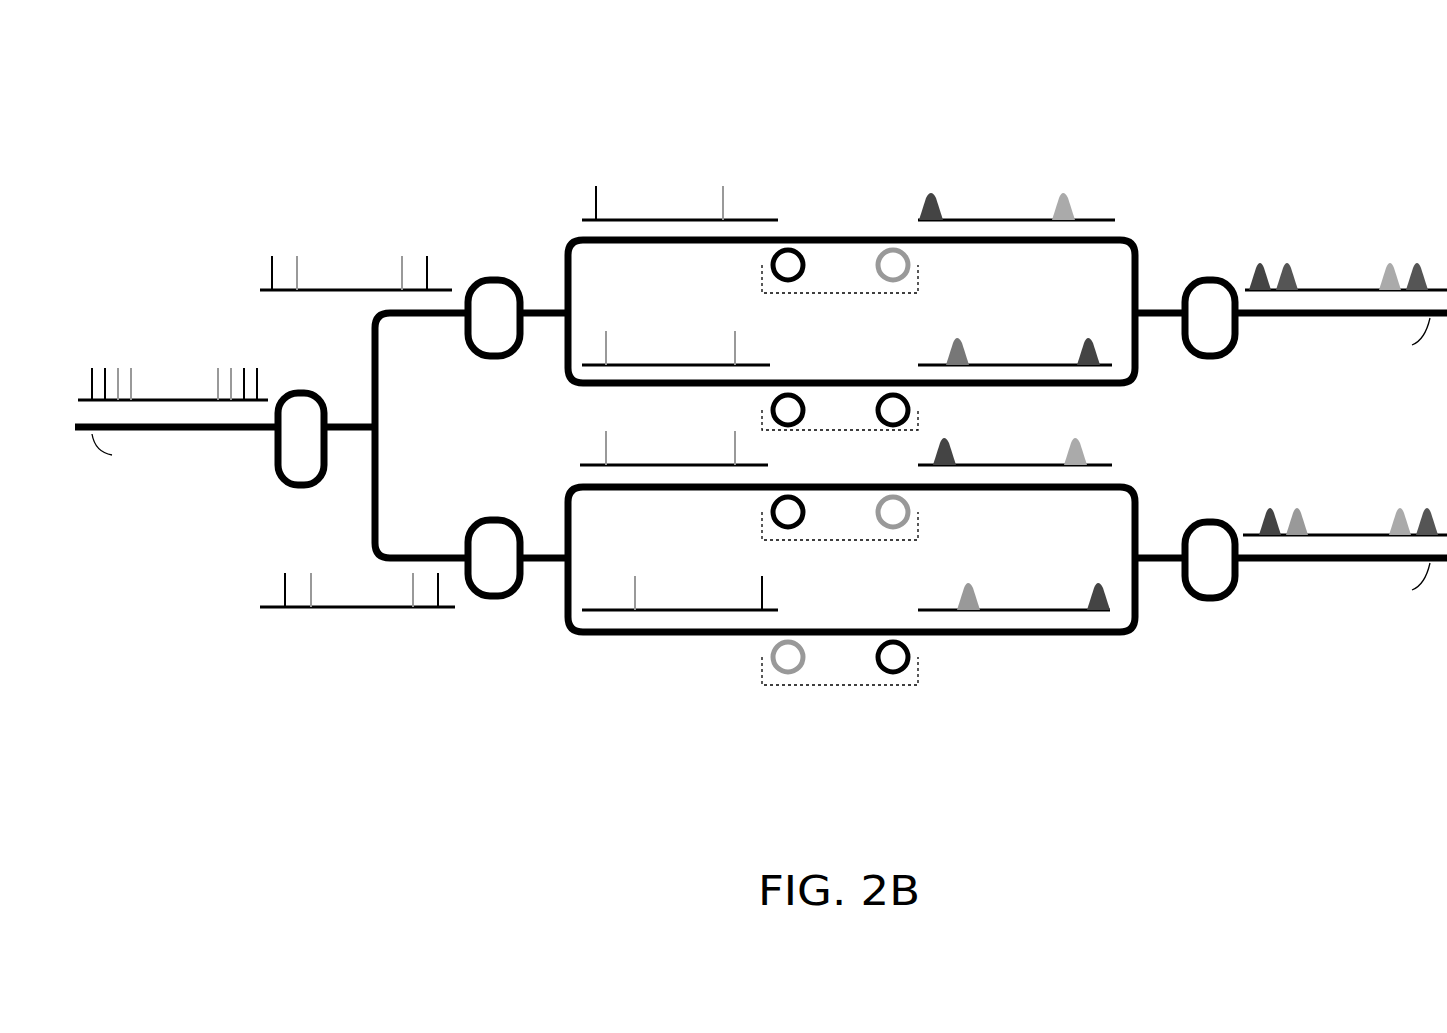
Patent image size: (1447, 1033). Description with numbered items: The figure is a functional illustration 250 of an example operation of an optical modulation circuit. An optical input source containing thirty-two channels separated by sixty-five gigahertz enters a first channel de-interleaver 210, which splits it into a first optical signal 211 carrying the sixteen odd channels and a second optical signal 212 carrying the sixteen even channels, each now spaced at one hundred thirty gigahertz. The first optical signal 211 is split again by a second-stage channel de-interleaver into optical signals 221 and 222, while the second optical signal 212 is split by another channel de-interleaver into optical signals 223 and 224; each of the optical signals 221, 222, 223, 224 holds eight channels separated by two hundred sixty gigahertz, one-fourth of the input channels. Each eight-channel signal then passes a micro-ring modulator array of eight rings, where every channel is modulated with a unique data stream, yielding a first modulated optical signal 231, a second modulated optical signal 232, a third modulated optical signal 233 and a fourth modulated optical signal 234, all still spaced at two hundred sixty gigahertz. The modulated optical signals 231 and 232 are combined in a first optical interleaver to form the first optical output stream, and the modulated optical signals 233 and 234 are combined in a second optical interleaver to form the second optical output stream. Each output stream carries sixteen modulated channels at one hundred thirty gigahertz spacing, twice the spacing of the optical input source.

The functional illustration 250 is at (212, 72).
The first channel de-interleaver 210 is at (301, 439).
The first optical signal 211 is at (400, 322).
The second optical signal 212 is at (398, 548).
The optical signal 221 is at (571, 245).
The optical signal 222 is at (571, 380).
The optical signal 223 is at (571, 492).
The optical signal 224 is at (576, 632).
The first modulated optical signal 231 is at (1130, 245).
The second modulated optical signal 232 is at (1131, 381).
The third modulated optical signal 233 is at (1130, 492).
The fourth modulated optical signal 234 is at (1126, 632).